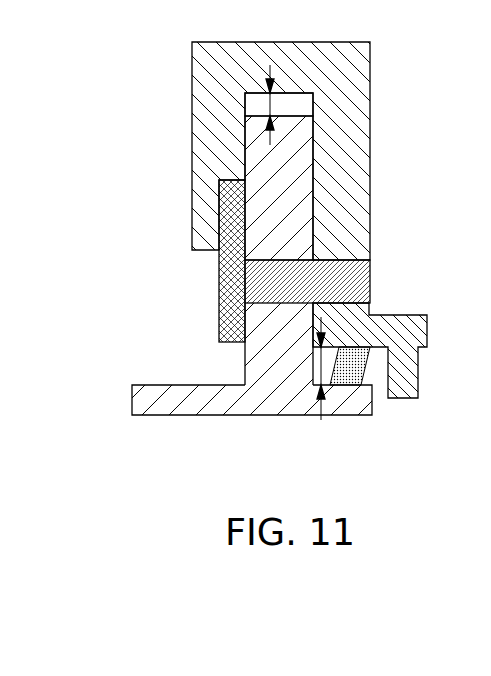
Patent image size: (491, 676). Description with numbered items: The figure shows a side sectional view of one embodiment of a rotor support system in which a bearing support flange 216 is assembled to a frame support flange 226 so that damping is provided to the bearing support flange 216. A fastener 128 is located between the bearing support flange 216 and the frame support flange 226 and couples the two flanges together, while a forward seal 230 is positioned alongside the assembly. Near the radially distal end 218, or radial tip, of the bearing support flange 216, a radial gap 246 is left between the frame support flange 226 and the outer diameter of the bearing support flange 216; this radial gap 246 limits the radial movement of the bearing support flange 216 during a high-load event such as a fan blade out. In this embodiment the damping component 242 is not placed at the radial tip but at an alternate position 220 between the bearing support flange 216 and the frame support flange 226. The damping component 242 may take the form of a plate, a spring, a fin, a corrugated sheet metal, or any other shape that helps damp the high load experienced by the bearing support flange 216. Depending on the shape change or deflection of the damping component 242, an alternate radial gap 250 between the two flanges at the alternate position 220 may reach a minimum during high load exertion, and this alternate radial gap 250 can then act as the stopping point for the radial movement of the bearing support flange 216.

The fastener 128 is at (370, 275).
The bearing support flange 216 is at (160, 395).
The distal end 218 is at (300, 113).
The alternate position 220 is at (370, 378).
The frame support flange 226 is at (405, 318).
The forward seal 230 is at (218, 317).
The damping component 242 is at (378, 378).
The radial gap 246 is at (270, 105).
The alternate radial gap 250 is at (307, 372).